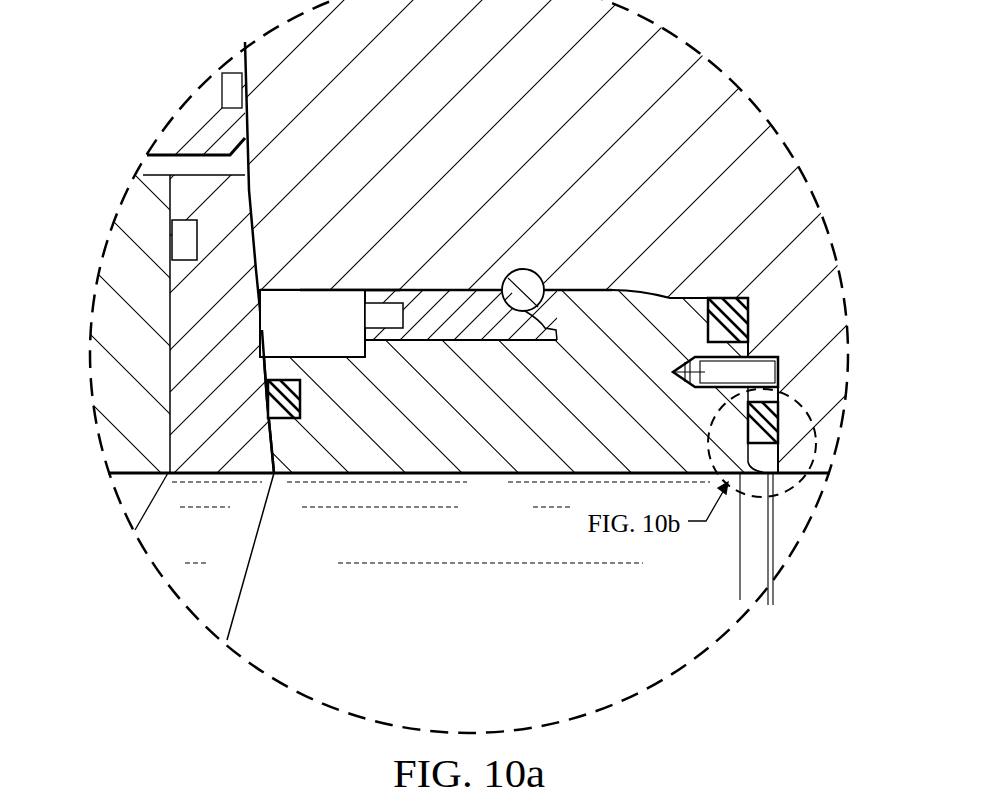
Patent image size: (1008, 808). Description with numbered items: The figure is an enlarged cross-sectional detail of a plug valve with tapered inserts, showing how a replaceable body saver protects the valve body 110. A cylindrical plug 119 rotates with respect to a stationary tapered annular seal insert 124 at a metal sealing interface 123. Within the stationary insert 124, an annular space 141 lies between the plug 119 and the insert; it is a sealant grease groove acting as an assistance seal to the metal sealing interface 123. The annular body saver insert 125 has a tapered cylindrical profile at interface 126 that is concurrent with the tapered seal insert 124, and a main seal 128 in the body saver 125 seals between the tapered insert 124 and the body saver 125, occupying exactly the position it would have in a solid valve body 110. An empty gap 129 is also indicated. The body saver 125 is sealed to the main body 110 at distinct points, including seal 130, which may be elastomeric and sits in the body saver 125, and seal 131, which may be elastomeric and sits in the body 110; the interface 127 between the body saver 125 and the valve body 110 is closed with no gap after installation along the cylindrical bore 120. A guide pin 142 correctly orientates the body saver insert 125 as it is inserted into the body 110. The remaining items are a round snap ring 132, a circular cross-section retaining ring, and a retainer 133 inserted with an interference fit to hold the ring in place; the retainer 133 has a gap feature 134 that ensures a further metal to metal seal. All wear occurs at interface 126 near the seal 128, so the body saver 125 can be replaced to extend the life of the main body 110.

The valve body 110 is at (790, 206).
The plug 119 is at (107, 380).
The cylindrical bore 120 is at (280, 643).
The interface between plug and tapered seal insert 123 is at (170, 437).
The tapered seal insert 124 is at (205, 295).
The body saver insert 125 is at (486, 473).
The interface between seal insert and body saver 126 is at (270, 437).
The interface between body saver and valve body 127 is at (750, 345).
The main seal 128 is at (288, 436).
The empty gap 129 is at (347, 293).
The seal 130 is at (733, 315).
The seal 131 is at (775, 420).
The round snap ring 132 is at (523, 290).
The retainer 133 is at (447, 298).
The gap feature 134 is at (388, 318).
The annular space 141 is at (185, 240).
The guide pin 142 is at (685, 365).